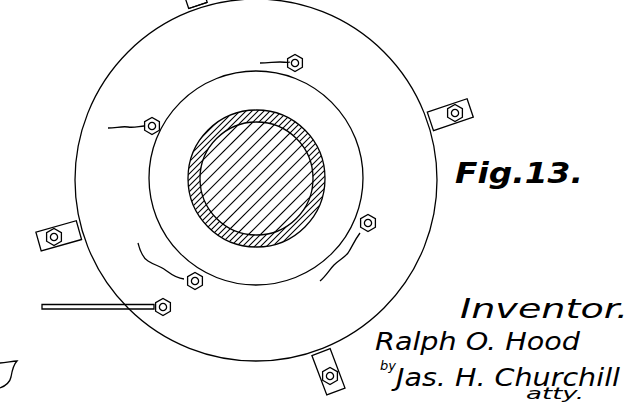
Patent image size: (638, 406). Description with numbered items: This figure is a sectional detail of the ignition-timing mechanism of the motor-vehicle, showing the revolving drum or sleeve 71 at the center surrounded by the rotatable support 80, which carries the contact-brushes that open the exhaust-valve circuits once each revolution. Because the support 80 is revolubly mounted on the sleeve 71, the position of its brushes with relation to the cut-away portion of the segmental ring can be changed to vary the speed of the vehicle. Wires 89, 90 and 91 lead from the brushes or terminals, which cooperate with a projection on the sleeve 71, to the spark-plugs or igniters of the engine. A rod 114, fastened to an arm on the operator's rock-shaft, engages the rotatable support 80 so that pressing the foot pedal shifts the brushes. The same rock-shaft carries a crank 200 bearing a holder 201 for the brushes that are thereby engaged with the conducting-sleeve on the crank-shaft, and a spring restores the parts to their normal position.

The support 80 is at (372, 50).
The drum or sleeve 71 is at (322, 182).
The wire 89 is at (38, 143).
The wire 90 is at (315, 377).
The wire 91 is at (455, 50).
The rod 114 is at (80, 310).
The crank 200 is at (52, 0).
The holder 201 is at (83, 0).